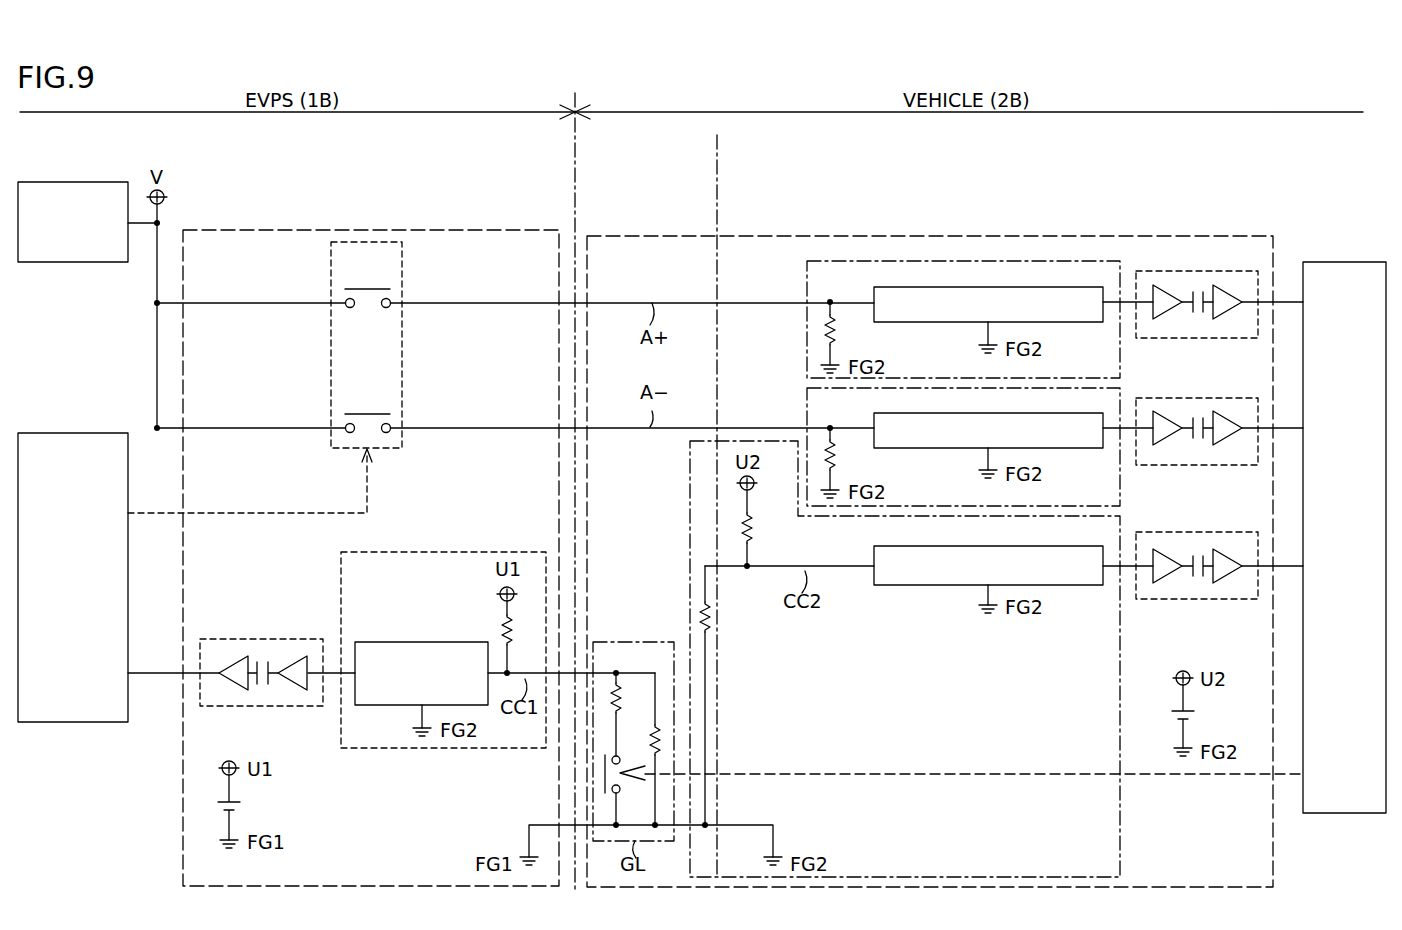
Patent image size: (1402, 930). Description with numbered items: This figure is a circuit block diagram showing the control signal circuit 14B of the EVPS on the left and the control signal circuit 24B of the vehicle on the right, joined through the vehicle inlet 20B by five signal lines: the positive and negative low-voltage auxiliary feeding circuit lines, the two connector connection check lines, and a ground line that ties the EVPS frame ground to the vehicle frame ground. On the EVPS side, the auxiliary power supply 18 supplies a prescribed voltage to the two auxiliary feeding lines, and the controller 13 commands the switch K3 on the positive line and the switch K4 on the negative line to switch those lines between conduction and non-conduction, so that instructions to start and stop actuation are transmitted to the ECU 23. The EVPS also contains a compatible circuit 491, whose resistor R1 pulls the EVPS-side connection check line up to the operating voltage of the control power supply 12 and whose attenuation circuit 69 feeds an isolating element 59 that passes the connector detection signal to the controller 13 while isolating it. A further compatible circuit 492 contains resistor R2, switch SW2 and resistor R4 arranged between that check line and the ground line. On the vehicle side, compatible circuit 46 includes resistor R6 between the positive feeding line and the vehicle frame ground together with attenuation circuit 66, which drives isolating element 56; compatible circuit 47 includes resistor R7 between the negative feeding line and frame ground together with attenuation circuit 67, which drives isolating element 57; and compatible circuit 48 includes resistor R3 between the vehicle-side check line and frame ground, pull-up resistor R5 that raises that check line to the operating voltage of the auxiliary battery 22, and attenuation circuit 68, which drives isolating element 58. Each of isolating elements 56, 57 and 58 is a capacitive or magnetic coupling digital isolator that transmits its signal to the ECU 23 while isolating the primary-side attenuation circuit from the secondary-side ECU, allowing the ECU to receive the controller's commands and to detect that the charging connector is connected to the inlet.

The auxiliary power supply 18 is at (78, 182).
The controller 13 is at (76, 433).
The control signal circuit 14B is at (480, 230).
The control signal circuit 24B is at (1190, 236).
The ECU 23 is at (1338, 262).
The vehicle inlet 20B is at (702, 165).
The isolating element 56 is at (1200, 271).
The isolating element 57 is at (1200, 398).
The isolating element 58 is at (1200, 532).
The isolating element 59 is at (268, 639).
The attenuation circuit 66 is at (990, 287).
The attenuation circuit 67 is at (990, 413).
The attenuation circuit 68 is at (990, 546).
The attenuation circuit 69 is at (428, 642).
The compatible circuit 491 is at (473, 552).
The compatible circuit 492 is at (632, 642).
The compatible circuit 46 is at (806, 342).
The compatible circuit 47 is at (806, 405).
The compatible circuit 48 is at (1120, 637).
The control power supply 12 is at (237, 803).
The auxiliary battery 22 is at (1190, 712).
The switch K3 is at (366, 289).
The switch K4 is at (366, 414).
The switch SW2 is at (603, 777).
The resistor R1 is at (522, 630).
The resistor R2 is at (631, 714).
The resistor R3 is at (714, 611).
The resistor R4 is at (639, 749).
The resistor R5 is at (762, 528).
The resistor R6 is at (844, 337).
The resistor R7 is at (844, 463).